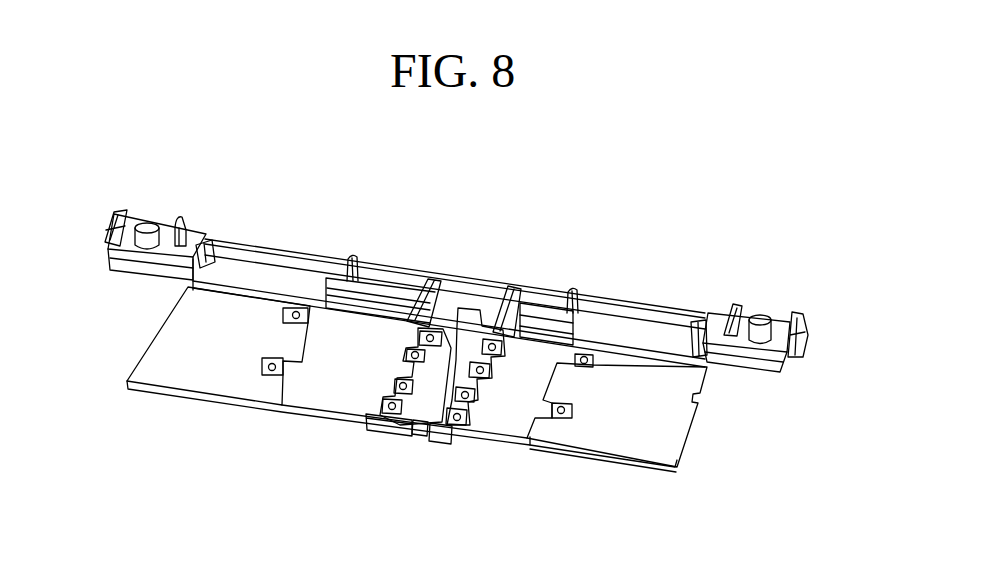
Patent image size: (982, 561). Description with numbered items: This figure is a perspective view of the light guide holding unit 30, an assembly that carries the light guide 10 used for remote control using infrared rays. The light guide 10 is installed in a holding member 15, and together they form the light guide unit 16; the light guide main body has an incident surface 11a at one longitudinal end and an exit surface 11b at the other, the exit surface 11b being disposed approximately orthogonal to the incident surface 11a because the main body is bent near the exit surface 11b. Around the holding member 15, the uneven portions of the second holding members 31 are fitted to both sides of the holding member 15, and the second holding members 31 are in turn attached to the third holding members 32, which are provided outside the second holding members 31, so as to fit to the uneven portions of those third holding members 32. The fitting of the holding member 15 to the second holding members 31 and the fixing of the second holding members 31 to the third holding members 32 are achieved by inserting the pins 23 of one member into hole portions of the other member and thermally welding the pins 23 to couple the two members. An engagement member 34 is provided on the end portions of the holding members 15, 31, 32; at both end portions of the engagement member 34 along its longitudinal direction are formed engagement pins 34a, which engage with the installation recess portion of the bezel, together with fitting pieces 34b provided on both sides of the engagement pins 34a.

The light guide 10 is at (450, 398).
The incident surface 11a is at (418, 438).
The exit surface 11b is at (467, 313).
The holding member 15 is at (379, 427).
The light guide unit 16 is at (369, 402).
The pins 23 is at (413, 352).
The light guide holding unit 30 is at (303, 249).
The second holding members 31 is at (314, 400).
The third holding members 32 is at (197, 372).
The engagement member 34 is at (607, 316).
The engagement pins 34a is at (148, 223).
The fitting pieces 34b is at (104, 213).